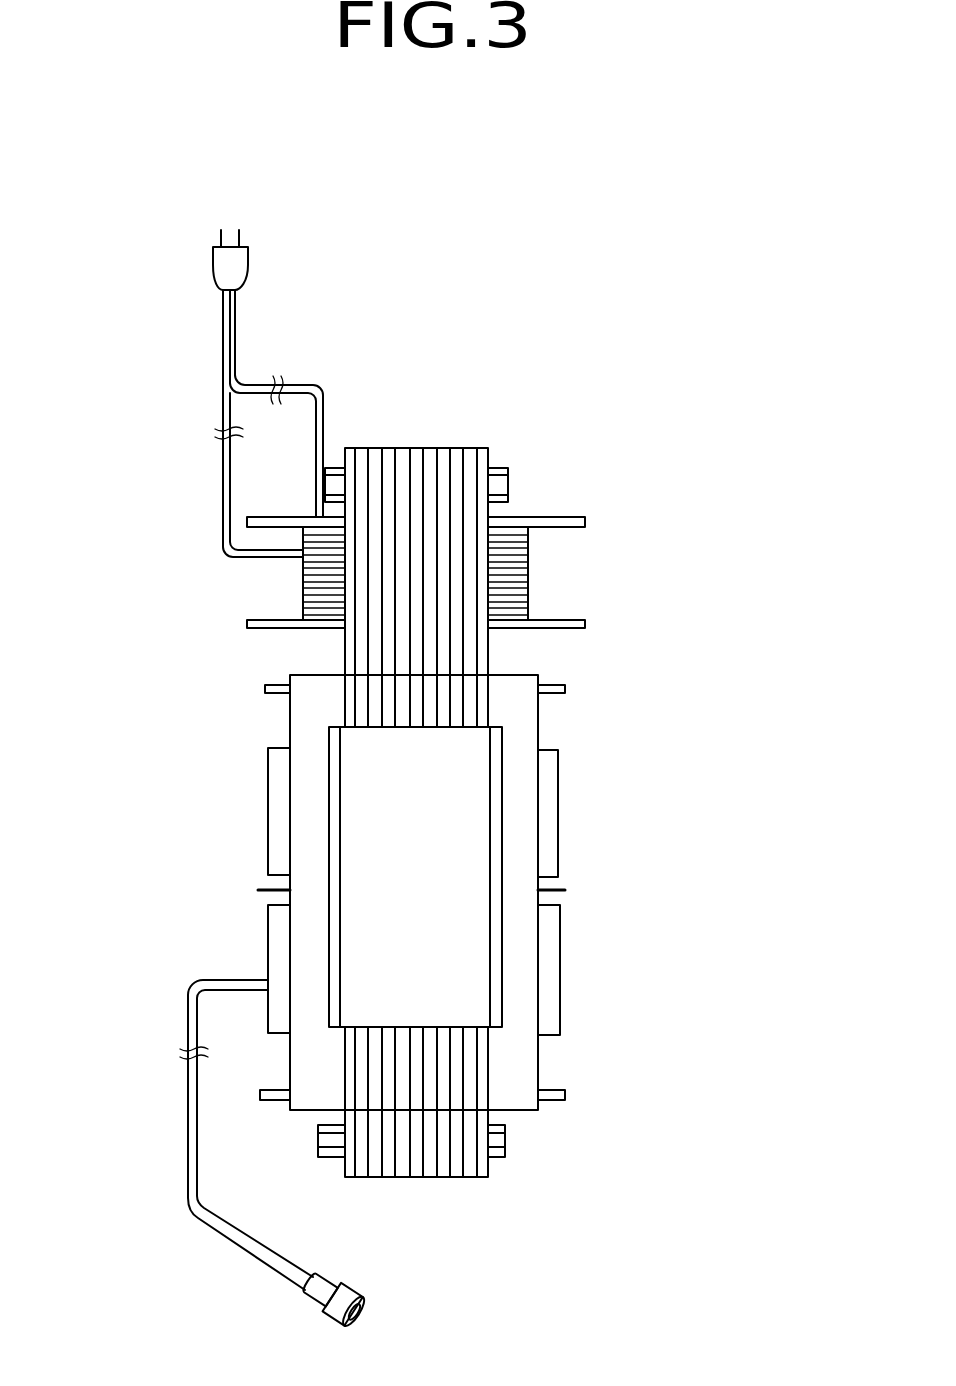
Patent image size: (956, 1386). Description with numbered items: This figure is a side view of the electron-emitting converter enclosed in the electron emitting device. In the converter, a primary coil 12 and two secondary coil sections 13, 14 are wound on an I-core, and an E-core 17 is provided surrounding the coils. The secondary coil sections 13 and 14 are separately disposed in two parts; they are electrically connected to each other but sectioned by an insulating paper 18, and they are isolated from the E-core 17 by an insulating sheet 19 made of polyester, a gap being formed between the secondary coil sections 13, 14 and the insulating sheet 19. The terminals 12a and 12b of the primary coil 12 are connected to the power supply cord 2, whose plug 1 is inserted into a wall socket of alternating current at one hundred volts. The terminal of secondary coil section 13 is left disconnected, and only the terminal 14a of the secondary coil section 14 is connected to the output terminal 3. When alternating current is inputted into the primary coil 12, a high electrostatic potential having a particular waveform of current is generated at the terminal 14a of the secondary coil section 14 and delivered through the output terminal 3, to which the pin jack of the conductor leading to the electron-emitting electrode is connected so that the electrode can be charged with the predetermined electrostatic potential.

The plug 1 is at (248, 270).
The power supply cord 2 is at (238, 333).
The output terminal 3 is at (340, 1277).
The primary coil 12 is at (532, 590).
The terminal of the primary coil 12a is at (325, 428).
The terminal of the primary coil 12b is at (223, 472).
The secondary coil section 13 is at (268, 798).
The secondary coil section 14 is at (268, 923).
The terminal of the secondary coil section 14a is at (217, 980).
The E-core 17 is at (455, 1178).
The insulating paper 18 is at (560, 890).
The insulating sheet 19 is at (530, 725).